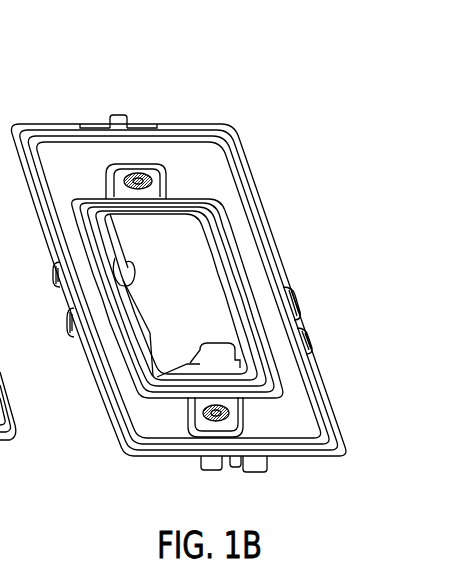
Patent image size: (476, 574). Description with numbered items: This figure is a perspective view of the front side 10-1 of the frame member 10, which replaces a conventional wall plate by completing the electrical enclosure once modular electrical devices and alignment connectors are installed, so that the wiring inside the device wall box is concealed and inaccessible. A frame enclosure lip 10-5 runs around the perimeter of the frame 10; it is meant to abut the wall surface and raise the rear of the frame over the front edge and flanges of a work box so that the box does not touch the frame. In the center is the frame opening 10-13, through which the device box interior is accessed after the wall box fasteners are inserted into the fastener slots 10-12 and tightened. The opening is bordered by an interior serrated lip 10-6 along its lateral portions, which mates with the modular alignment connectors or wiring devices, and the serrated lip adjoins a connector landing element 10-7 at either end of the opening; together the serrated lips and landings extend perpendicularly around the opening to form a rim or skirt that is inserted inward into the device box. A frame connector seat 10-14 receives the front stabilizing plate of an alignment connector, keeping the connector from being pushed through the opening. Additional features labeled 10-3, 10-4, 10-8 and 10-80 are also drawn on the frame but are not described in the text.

The frame member 10 is at (249, 84).
The front side 10-1 is at (297, 440).
The tabs 10-3 is at (118, 114).
The side clips 10-4 is at (0, 281).
The frame enclosure lip 10-5 is at (266, 210).
The interior serrated lip 10-6 is at (136, 313).
The connector landing element 10-7 is at (180, 372).
The bump 10-8 is at (211, 350).
The fastener slots 10-12 is at (141, 172).
The frame opening 10-13 is at (195, 313).
The frame connector seat 10-14 is at (197, 207).
The hook member 10-80 is at (136, 269).